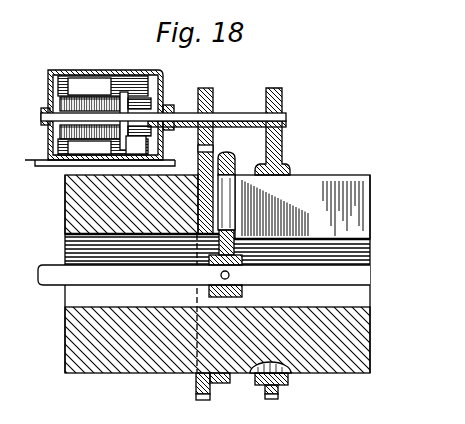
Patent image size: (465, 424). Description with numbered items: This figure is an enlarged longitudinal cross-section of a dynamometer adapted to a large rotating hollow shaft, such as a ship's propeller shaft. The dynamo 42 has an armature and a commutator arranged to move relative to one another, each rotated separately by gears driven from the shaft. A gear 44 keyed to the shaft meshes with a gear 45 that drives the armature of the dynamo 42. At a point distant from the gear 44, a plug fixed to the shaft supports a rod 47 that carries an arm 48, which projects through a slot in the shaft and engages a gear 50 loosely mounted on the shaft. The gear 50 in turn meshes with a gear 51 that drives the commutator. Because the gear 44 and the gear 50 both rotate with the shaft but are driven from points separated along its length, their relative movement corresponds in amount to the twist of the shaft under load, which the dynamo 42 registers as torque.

The dynamo 42 is at (58, 62).
The gear 51 is at (201, 88).
The gear 45 is at (273, 93).
The gear 50 is at (206, 152).
The arm 48 is at (224, 166).
The rod 47 is at (50, 264).
The gear 44 is at (276, 381).